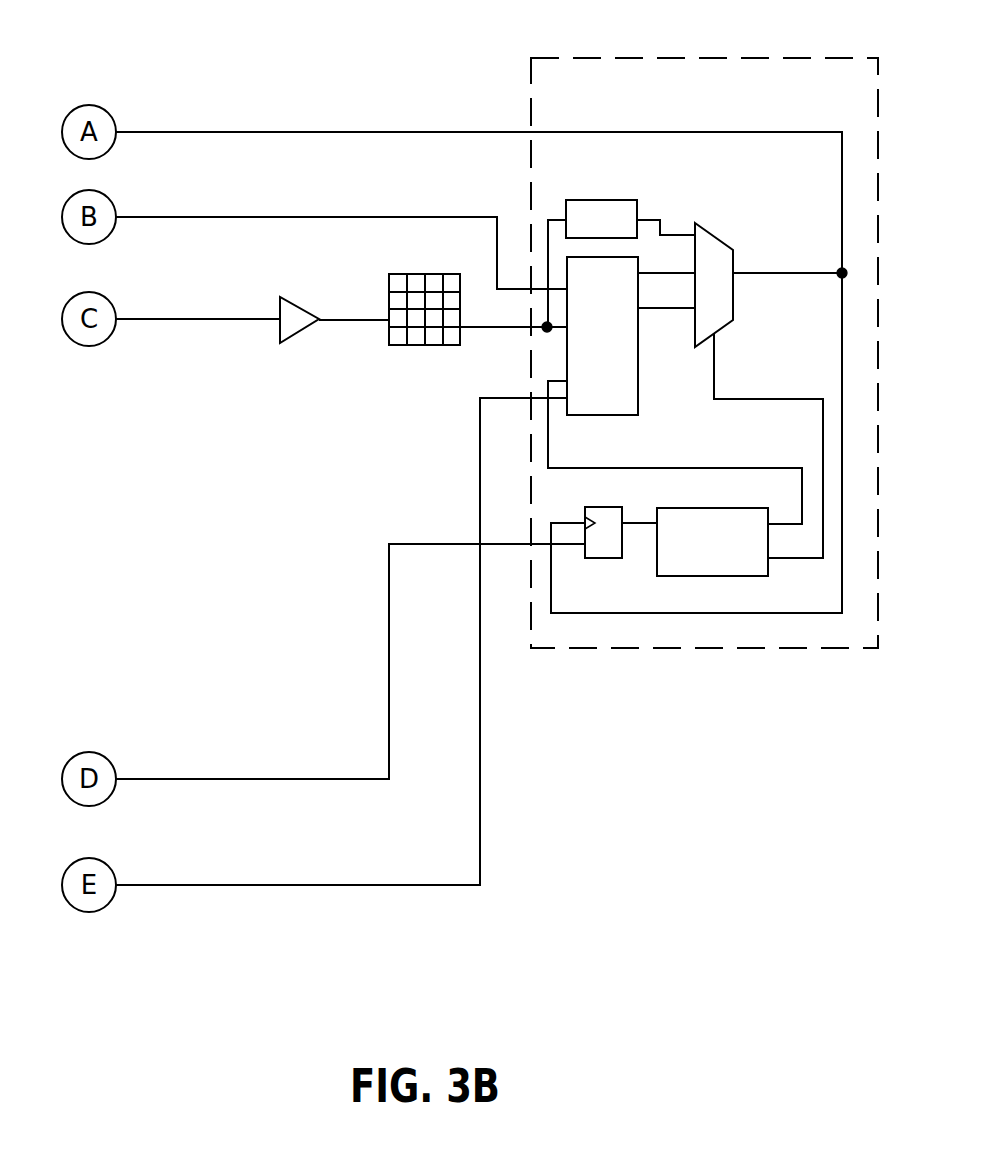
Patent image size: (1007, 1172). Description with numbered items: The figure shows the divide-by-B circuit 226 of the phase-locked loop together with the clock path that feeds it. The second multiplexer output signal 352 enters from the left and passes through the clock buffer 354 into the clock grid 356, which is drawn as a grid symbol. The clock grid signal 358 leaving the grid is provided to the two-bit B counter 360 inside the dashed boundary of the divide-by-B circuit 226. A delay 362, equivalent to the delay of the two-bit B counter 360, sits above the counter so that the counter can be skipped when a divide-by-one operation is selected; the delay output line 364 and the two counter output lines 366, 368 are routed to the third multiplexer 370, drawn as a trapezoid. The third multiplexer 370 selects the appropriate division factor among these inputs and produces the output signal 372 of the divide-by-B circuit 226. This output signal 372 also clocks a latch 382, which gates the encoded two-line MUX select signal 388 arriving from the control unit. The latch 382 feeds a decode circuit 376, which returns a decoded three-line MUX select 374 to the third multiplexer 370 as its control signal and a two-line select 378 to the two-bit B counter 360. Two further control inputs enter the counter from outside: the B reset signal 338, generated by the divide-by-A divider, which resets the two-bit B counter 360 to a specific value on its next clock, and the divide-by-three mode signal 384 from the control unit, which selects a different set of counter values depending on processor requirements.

The divide-by-B circuit 226 is at (678, 58).
The B reset signal 338 is at (341, 239).
The second multiplexer output signal 352 is at (198, 304).
The clock buffer 354 is at (322, 297).
The clock grid 356 is at (450, 347).
The clock grid signal 358 is at (515, 330).
The two-bit B counter 360 is at (602, 336).
The delay 362 is at (592, 263).
The register output line 364 is at (668, 213).
The counter output line 366 is at (666, 259).
The counter output line 368 is at (666, 294).
The third multiplexer 370 is at (720, 237).
The output signal 372 is at (747, 273).
The decoded three-line MUX select 374 is at (718, 399).
The decode circuit 376 is at (712, 542).
The two-line select 378 is at (632, 468).
The latch 382 is at (615, 560).
The divide-by-three mode signal 384 is at (341, 641).
The encoded two-line MUX select signal 388 is at (350, 662).